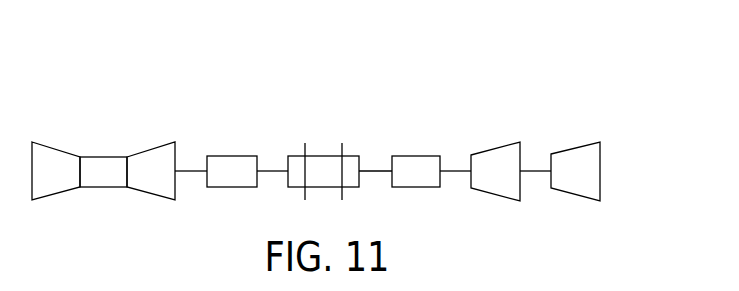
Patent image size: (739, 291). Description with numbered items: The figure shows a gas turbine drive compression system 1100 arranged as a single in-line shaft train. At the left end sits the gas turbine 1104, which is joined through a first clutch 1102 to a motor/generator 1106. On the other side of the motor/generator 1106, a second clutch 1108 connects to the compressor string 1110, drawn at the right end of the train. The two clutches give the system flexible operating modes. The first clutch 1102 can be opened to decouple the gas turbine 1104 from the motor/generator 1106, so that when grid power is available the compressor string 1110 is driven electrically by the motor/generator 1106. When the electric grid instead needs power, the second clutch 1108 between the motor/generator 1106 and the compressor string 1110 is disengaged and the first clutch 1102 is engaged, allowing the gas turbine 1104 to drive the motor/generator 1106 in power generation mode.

The gas turbine drive compression system 1100 is at (658, 36).
The first clutch 1102 is at (230, 155).
The gas turbine 1104 is at (99, 155).
The motor/generator 1106 is at (318, 155).
The second clutch 1108 is at (413, 155).
The compressor string 1110 is at (600, 126).